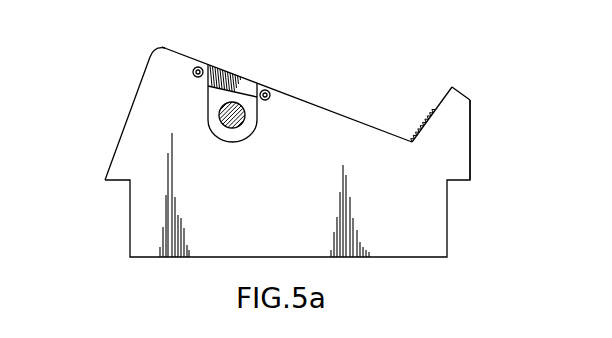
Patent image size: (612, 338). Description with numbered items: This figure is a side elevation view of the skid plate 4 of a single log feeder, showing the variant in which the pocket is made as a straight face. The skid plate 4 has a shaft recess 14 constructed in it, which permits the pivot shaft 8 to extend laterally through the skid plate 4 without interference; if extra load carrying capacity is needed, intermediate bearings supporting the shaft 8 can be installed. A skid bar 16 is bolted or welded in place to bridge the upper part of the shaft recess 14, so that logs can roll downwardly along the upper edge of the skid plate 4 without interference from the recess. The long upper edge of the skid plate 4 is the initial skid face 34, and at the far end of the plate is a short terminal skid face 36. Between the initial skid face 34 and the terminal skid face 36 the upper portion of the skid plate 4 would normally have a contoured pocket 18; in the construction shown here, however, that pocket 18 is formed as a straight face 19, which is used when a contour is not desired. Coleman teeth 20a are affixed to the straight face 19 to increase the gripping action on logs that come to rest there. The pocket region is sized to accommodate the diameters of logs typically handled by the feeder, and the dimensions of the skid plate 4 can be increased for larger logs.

The skid plate 4 is at (288, 208).
The pivot shaft 8 is at (217, 118).
The shaft recess 14 is at (259, 117).
The skid bar 16 is at (240, 83).
The contoured pocket 18 is at (427, 102).
The straight face 19 is at (440, 102).
The Coleman teeth 20a is at (415, 130).
The initial skid face 34 is at (325, 108).
The terminal skid face 36 is at (453, 86).